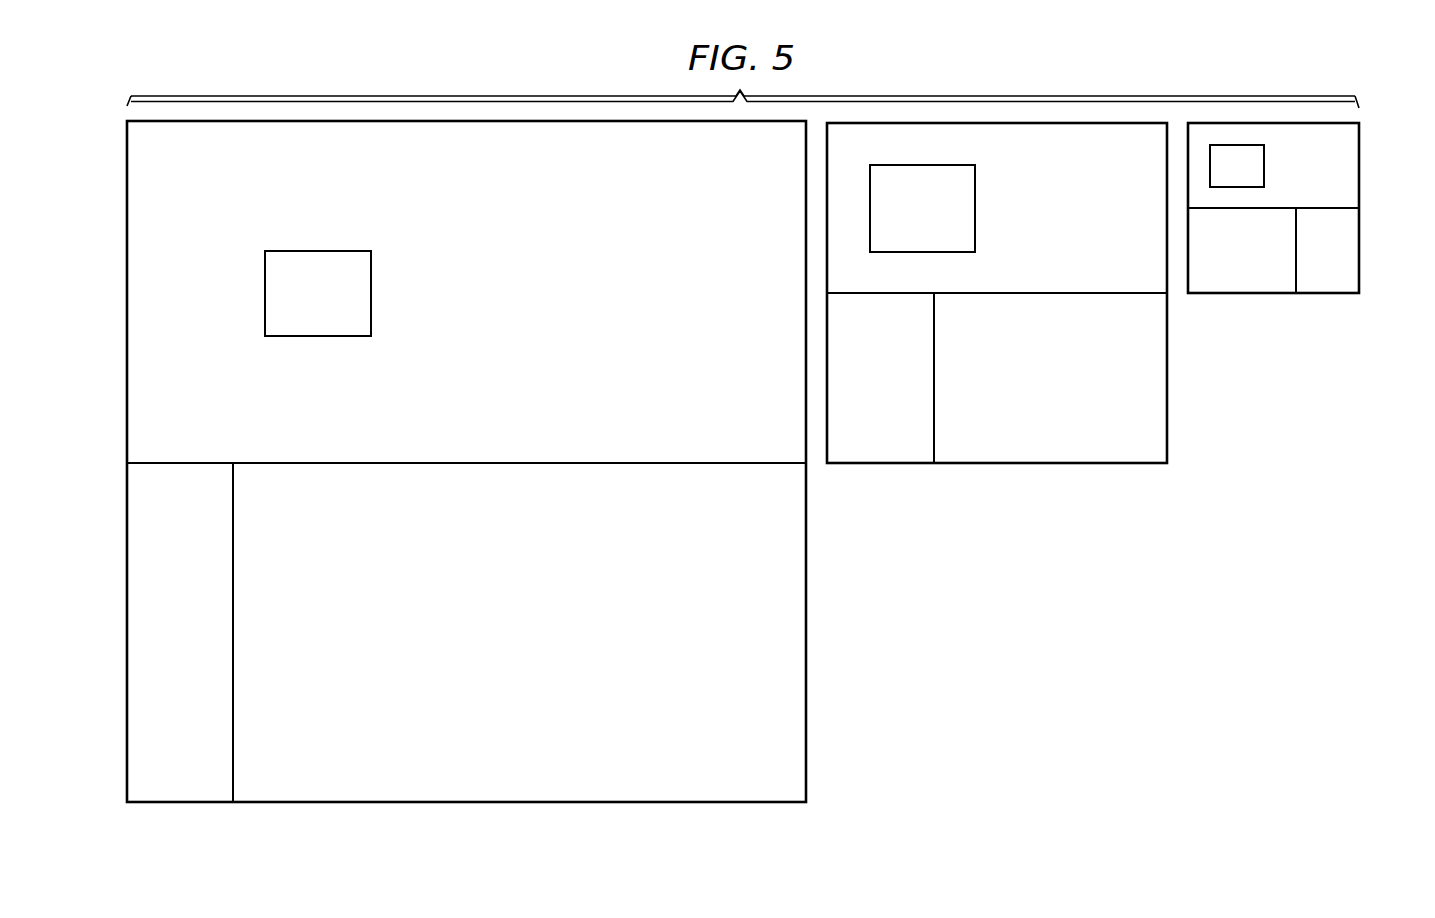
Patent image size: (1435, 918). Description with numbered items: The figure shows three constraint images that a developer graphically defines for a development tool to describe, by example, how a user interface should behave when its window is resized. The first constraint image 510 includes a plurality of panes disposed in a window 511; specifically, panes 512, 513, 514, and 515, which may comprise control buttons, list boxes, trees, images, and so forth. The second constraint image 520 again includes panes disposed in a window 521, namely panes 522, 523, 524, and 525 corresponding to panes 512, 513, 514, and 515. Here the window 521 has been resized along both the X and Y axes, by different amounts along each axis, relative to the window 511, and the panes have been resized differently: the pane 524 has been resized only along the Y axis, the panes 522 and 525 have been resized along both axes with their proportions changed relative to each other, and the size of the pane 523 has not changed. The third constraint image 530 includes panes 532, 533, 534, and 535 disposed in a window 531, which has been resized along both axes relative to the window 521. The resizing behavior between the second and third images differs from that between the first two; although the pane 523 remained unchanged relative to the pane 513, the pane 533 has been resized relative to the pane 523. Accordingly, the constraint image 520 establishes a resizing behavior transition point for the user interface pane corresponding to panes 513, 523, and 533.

The constraint image 510 is at (504, 503).
The window 511 is at (816, 722).
The pane 512 is at (633, 308).
The pane 513 is at (337, 308).
The pane 514 is at (200, 647).
The pane 515 is at (538, 647).
The constraint image 520 is at (1036, 333).
The window 521 is at (1178, 382).
The pane 522 is at (1090, 224).
The pane 523 is at (943, 224).
The pane 524 is at (900, 392).
The pane 525 is at (1068, 393).
The constraint image 530 is at (1311, 247).
The window 531 is at (1370, 239).
The pane 532 is at (1352, 170).
The pane 533 is at (1264, 165).
The pane 534 is at (1260, 266).
The pane 535 is at (1346, 266).